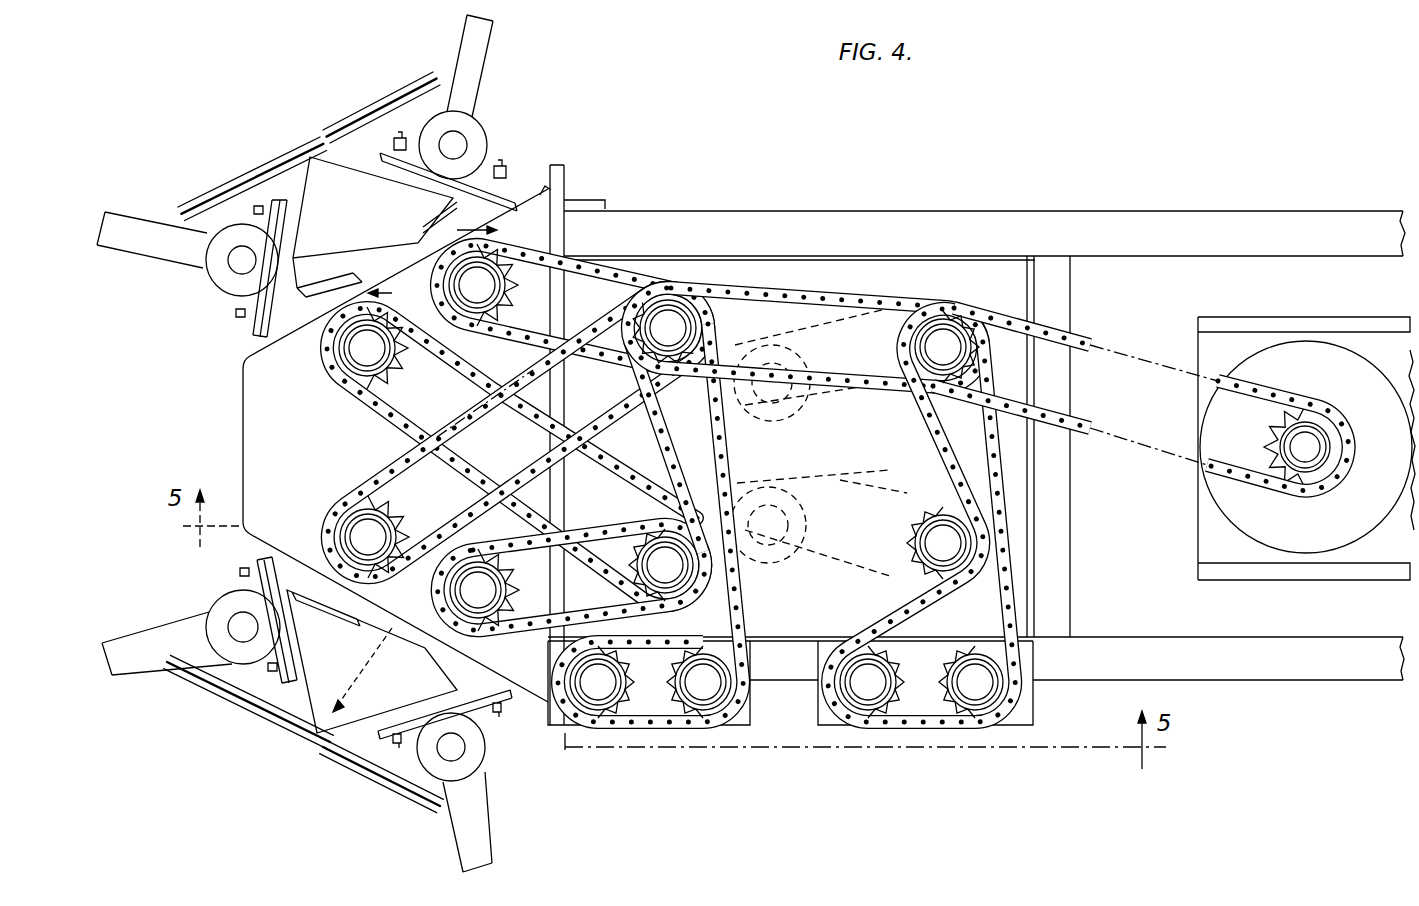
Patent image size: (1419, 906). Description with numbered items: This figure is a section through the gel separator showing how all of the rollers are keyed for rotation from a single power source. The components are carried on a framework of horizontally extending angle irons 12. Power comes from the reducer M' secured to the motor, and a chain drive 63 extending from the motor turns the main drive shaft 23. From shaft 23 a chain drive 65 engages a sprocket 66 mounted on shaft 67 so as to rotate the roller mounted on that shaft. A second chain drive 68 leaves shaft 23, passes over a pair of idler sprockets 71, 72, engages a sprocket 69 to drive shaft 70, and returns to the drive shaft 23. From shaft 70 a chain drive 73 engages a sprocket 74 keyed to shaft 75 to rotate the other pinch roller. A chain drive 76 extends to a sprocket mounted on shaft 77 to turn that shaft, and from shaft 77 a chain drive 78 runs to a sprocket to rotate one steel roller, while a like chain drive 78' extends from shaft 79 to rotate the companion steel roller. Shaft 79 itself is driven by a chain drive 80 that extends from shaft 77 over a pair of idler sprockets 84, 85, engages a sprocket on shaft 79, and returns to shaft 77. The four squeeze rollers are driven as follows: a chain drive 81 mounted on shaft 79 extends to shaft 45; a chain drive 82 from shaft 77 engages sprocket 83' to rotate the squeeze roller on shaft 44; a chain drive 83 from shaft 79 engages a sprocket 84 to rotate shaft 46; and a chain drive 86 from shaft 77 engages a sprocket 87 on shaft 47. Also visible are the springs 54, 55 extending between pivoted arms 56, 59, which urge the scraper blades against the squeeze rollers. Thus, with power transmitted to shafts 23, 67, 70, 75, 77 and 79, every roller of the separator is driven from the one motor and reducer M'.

The horizontally extending angle irons 12 is at (1245, 222).
The main drive shaft 23 is at (946, 342).
The shaft 44 is at (373, 534).
The shaft 45 is at (479, 584).
The shaft 46 is at (364, 357).
The shaft 47 is at (480, 280).
The spring 54 is at (229, 185).
The spring 55 is at (365, 113).
The pivoted arm 56 is at (488, 822).
The pivoted arm 59 is at (487, 65).
The chain drive 63 is at (1086, 437).
The chain drive 65 is at (825, 414).
The sprocket 66 is at (812, 337).
The shaft 67 is at (772, 398).
The chain drive 68 is at (985, 452).
The sprocket 69 is at (882, 562).
The shaft 70 is at (941, 536).
The idler sprocket 71 is at (885, 668).
The idler sprocket 72 is at (973, 658).
The chain drive 73 is at (819, 571).
The sprocket 74 is at (822, 494).
The shaft 75 is at (768, 541).
The chain drive 76 is at (832, 298).
The shaft 77 is at (670, 322).
The chain drive 78 is at (518, 432).
The chain drive 78' is at (670, 446).
The shaft 79 is at (675, 590).
The chain drive 80 is at (707, 430).
The chain drive 81 is at (583, 617).
The chain drive 82 is at (460, 441).
The chain drive 83 is at (516, 456).
The sprocket 83' is at (403, 526).
The sprocket 84 is at (402, 378).
The idler sprocket 85 is at (692, 714).
The chain drive 86 is at (609, 268).
The sprocket 87 is at (518, 304).
The reducer M' is at (1297, 470).